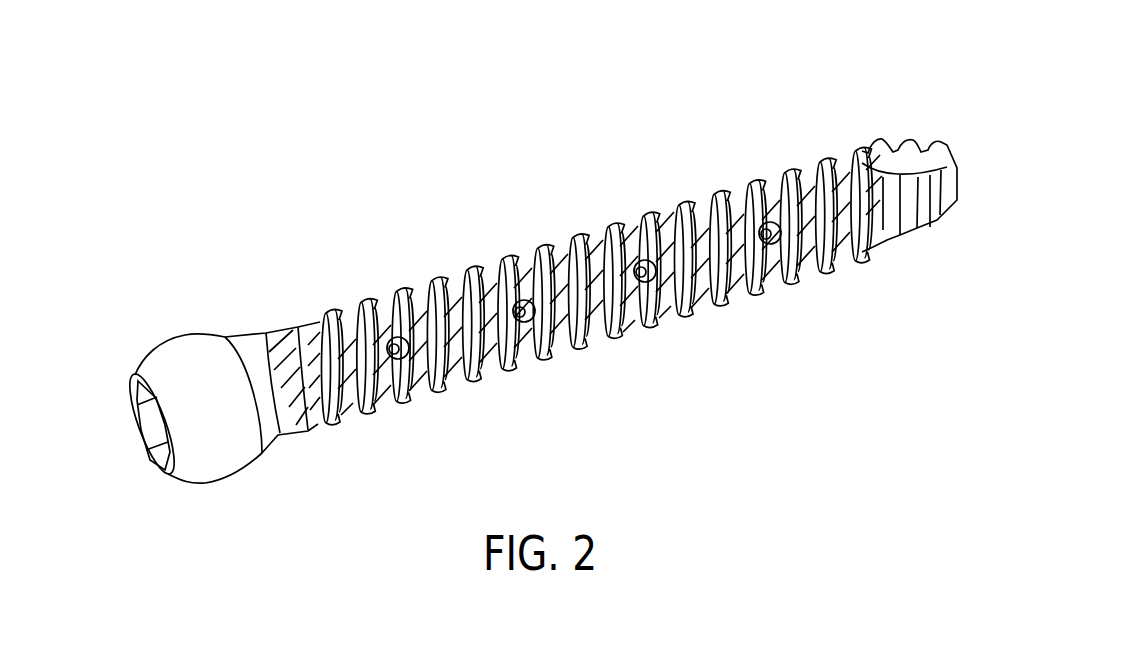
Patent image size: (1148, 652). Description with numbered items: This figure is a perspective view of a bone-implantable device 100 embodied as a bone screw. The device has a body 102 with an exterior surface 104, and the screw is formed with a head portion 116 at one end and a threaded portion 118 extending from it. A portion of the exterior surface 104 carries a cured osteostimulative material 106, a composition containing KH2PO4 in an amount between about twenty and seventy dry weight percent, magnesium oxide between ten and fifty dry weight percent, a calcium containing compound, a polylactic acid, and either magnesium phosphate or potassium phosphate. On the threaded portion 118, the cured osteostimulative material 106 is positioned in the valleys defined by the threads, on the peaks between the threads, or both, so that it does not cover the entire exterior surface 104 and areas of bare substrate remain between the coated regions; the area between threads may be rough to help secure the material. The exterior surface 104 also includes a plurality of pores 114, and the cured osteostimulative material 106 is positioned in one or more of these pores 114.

The bone-implantable device 100 is at (748, 100).
The body 102 is at (223, 468).
The exterior surface 104 is at (238, 311).
The cured osteostimulative material 106 is at (600, 247).
The pores 114 is at (522, 333).
The head portion 116 is at (100, 318).
The threaded portion 118 is at (684, 344).